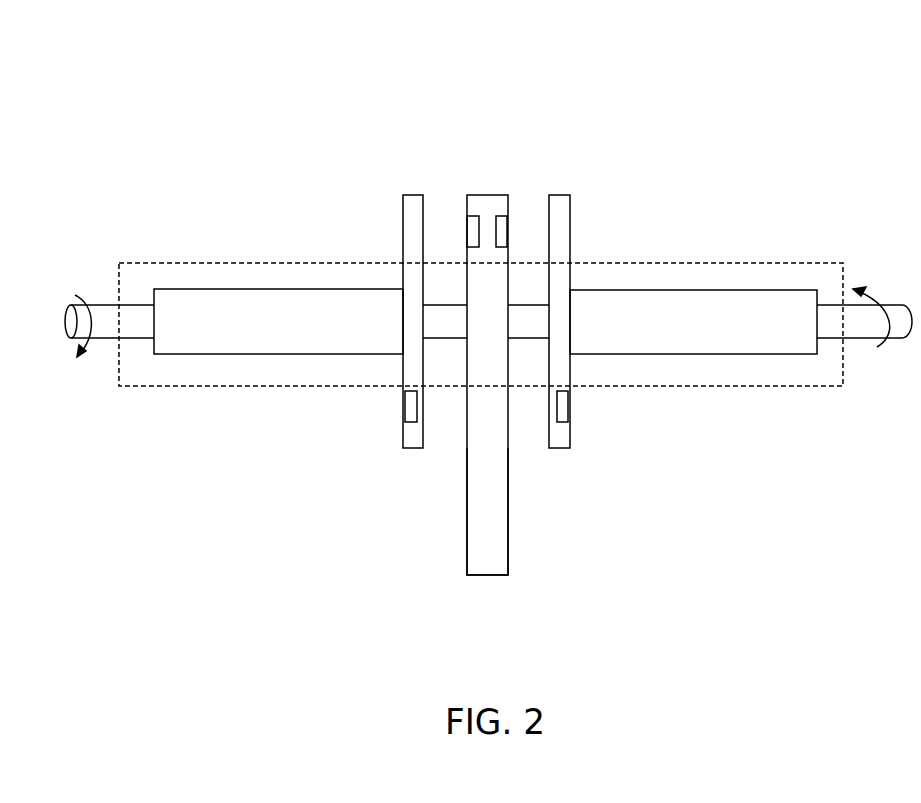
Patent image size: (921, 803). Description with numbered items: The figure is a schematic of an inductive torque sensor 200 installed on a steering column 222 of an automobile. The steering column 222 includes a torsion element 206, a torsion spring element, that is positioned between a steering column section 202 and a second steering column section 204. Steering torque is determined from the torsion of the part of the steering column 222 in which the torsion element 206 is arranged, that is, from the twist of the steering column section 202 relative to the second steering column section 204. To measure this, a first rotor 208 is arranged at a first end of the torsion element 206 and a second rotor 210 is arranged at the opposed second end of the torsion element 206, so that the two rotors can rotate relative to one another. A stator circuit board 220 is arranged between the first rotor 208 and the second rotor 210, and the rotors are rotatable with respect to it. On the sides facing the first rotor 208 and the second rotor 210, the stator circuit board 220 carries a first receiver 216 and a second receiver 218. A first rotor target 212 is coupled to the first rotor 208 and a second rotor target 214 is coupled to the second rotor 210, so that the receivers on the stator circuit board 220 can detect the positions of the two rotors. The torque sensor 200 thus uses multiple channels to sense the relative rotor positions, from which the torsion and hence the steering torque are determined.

The torque sensor 200 is at (722, 130).
The steering column section 202 is at (217, 288).
The second steering column section 204 is at (712, 289).
The torsion element 206 is at (455, 339).
The first rotor 208 is at (413, 195).
The second rotor 210 is at (563, 195).
The first rotor target 212 is at (405, 406).
The second rotor target 214 is at (570, 410).
The first receiver 216 is at (468, 215).
The second receiver 218 is at (503, 215).
The stator circuit board 220 is at (508, 493).
The steering column 222 is at (140, 262).